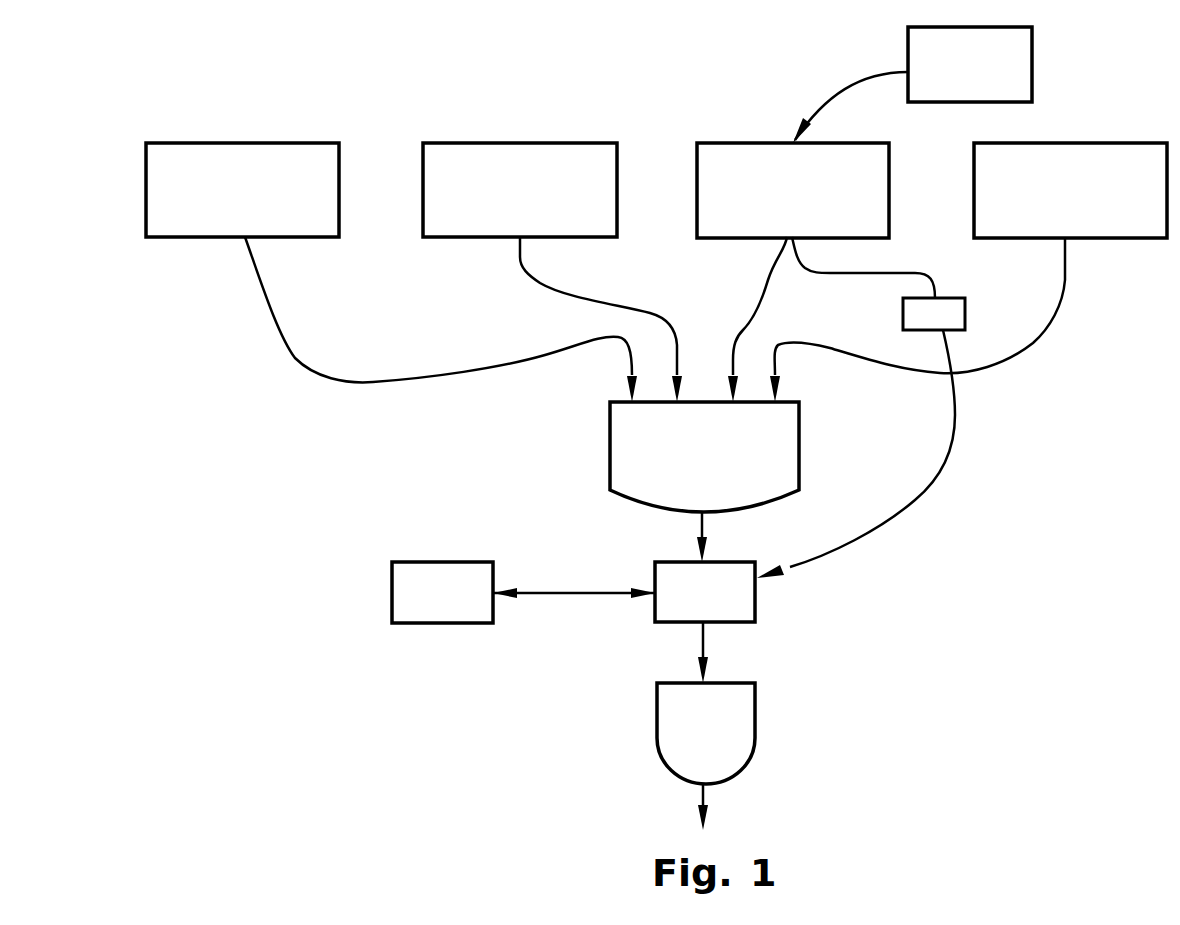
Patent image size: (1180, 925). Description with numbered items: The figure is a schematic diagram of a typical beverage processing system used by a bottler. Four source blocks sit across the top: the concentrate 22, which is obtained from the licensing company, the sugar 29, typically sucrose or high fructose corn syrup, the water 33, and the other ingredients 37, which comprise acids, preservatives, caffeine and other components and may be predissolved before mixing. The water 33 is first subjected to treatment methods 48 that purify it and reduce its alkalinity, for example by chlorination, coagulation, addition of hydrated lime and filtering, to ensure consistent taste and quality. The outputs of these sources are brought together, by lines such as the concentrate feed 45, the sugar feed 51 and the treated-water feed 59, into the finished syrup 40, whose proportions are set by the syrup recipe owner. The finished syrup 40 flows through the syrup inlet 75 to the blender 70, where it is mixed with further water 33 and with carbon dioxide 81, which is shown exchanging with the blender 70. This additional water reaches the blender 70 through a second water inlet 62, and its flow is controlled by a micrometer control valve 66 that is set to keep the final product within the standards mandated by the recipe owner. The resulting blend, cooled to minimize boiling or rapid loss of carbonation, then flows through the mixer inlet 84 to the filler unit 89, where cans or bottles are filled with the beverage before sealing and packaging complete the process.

The concentrate 22 is at (243, 133).
The sugar 29 is at (485, 133).
The treatment methods 48 is at (722, 135).
The other ingredients 37 is at (1085, 135).
The water 33 is at (1042, 62).
The signal line 45 is at (288, 352).
The signal line 51 is at (535, 287).
The signal line 59 is at (745, 310).
The second water inlet 62 is at (853, 283).
The micrometer control valve 66 is at (978, 313).
The finished syrup 40 is at (600, 439).
The syrup inlet 75 is at (680, 537).
The blender 70 is at (765, 598).
The carbon dioxide 81 is at (380, 592).
The mixer inlet 84 is at (688, 645).
The filler unit 89 is at (762, 720).